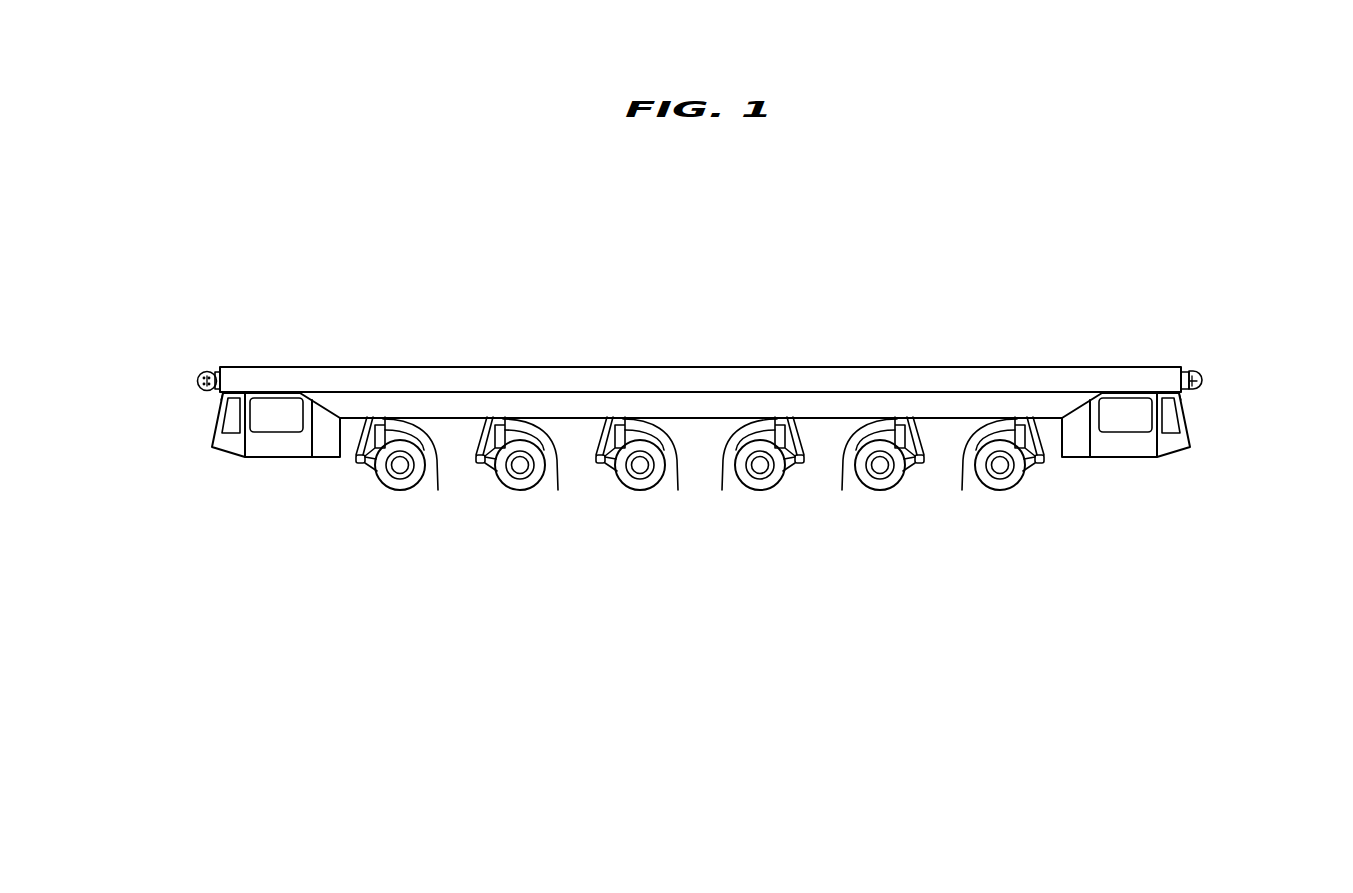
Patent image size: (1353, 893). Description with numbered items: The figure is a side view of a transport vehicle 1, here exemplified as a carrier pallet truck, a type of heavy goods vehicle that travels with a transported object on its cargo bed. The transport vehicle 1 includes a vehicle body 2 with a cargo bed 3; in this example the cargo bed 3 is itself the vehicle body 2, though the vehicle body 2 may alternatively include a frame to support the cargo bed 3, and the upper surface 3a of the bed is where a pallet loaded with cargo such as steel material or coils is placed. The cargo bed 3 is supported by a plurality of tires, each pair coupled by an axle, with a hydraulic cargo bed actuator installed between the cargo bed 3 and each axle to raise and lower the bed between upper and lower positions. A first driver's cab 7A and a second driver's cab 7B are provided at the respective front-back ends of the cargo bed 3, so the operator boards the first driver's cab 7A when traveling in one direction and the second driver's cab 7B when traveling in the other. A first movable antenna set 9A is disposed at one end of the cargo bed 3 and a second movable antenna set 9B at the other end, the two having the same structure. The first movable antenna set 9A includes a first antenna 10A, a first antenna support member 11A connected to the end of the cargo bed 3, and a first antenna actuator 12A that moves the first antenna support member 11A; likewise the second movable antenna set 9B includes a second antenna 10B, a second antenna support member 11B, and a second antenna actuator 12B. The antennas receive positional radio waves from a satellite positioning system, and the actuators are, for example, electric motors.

The transport vehicle 1 is at (903, 269).
The vehicle body 2 is at (1159, 363).
The cargo bed 3 is at (1008, 368).
The upper surface of frame 3a is at (620, 366).
The first driver's cab 7A is at (1123, 455).
The second driver's cab 7B is at (282, 457).
The first movable antenna set 9A is at (1272, 333).
The second movable antenna set 9B is at (131, 333).
The first antenna 10A is at (1203, 376).
The second antenna 10B is at (198, 373).
The first antenna support member 11A is at (1203, 387).
The second antenna support member 11B is at (199, 388).
The first antenna actuator 12A is at (1183, 393).
The second antenna actuator 12B is at (217, 395).